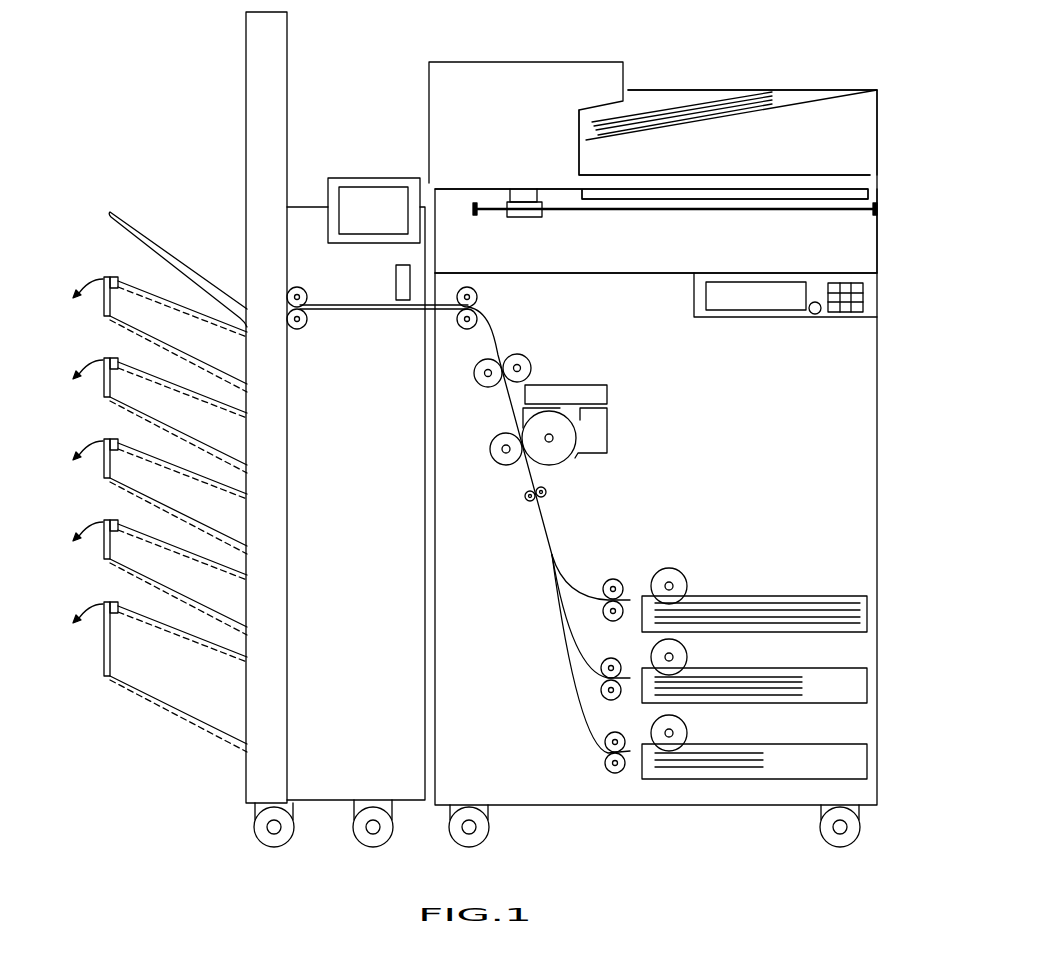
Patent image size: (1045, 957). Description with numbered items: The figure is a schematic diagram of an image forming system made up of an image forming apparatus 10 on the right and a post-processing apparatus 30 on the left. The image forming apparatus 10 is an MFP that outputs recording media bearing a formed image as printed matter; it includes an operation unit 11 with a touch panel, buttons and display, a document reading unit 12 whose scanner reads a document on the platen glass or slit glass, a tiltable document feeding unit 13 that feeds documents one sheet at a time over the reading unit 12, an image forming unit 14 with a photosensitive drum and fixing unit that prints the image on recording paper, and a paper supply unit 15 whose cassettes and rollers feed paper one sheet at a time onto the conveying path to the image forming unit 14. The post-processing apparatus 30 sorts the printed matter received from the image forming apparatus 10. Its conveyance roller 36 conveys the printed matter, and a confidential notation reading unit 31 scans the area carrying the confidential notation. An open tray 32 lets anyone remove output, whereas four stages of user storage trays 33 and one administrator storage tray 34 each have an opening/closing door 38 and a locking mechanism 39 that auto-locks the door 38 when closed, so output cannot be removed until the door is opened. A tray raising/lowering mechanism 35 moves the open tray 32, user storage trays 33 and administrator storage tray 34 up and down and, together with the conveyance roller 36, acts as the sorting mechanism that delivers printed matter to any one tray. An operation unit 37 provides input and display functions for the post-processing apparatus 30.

The image forming apparatus 10 is at (805, 66).
The operation unit 11 is at (870, 294).
The document reading unit 12 is at (863, 236).
The document feeding unit 13 is at (868, 133).
The image forming unit 14 is at (600, 422).
The paper supply unit 15 is at (888, 573).
The post-processing apparatus 30 is at (354, 97).
The confidential notation reading unit 31 is at (396, 281).
The open tray 32 is at (126, 224).
The user storage tray 33 is at (57, 268).
The administrator storage tray 34 is at (57, 590).
The tray raising/lowering mechanism 35 is at (287, 85).
The conveyance roller 36 is at (309, 326).
The operation unit 37 is at (356, 179).
The opening/closing door 38 is at (103, 300).
The locking mechanism 39 is at (118, 280).